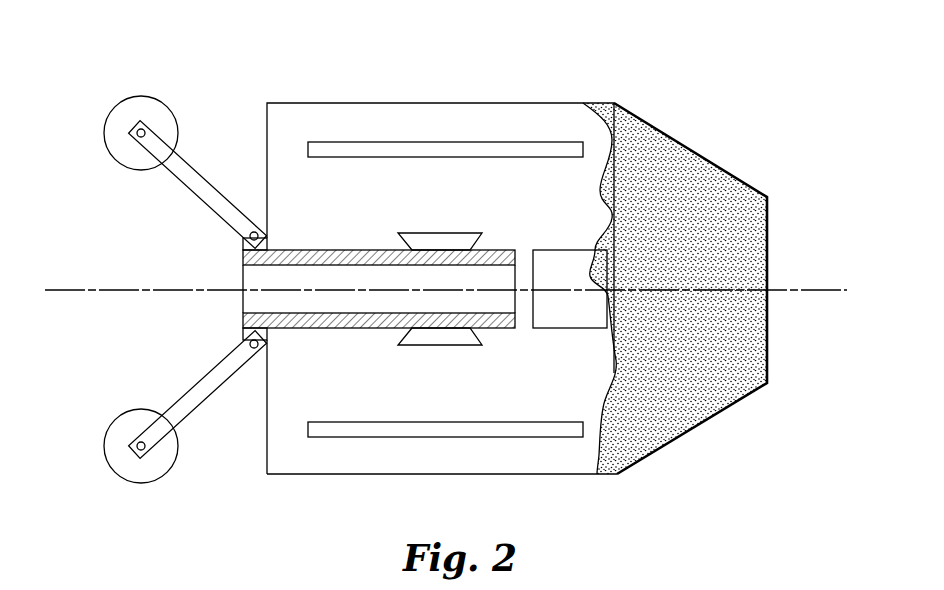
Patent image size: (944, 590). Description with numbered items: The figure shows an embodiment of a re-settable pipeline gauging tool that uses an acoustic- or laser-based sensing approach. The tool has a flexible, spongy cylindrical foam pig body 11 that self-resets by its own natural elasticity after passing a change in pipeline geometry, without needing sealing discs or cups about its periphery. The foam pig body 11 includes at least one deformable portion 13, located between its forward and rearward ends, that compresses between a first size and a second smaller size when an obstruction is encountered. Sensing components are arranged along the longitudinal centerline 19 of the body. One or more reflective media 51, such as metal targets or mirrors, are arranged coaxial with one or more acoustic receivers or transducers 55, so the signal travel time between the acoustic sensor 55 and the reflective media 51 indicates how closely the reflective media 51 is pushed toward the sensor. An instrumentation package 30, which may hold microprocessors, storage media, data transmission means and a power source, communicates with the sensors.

The foam pig body 11 is at (303, 477).
The deformable portion 13 is at (453, 128).
The longitudinal centerline 19 is at (810, 289).
The instrumentation package 30 is at (573, 330).
The reflective media 51 is at (349, 421).
The acoustic sensor 55 is at (458, 235).